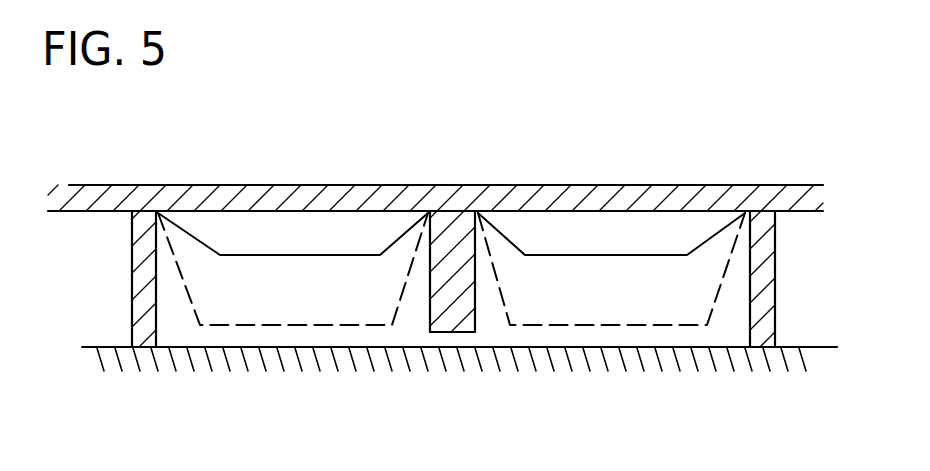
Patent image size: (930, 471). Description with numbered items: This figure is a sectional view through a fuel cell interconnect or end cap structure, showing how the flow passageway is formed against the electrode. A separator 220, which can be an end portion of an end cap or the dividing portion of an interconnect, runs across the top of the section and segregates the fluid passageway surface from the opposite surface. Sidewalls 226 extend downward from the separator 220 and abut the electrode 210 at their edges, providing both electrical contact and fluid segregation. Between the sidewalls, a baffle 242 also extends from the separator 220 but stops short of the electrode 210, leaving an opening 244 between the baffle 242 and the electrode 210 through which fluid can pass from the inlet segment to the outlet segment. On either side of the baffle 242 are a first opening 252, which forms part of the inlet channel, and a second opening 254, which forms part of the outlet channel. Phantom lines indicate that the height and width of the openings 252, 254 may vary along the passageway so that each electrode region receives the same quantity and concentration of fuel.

The electrode 210 is at (107, 347).
The separator 220 is at (722, 201).
The sidewall 226 is at (132, 277).
The baffle 242 is at (452, 322).
The opening 244 is at (462, 341).
The first opening 252 is at (297, 232).
The second opening 254 is at (603, 235).